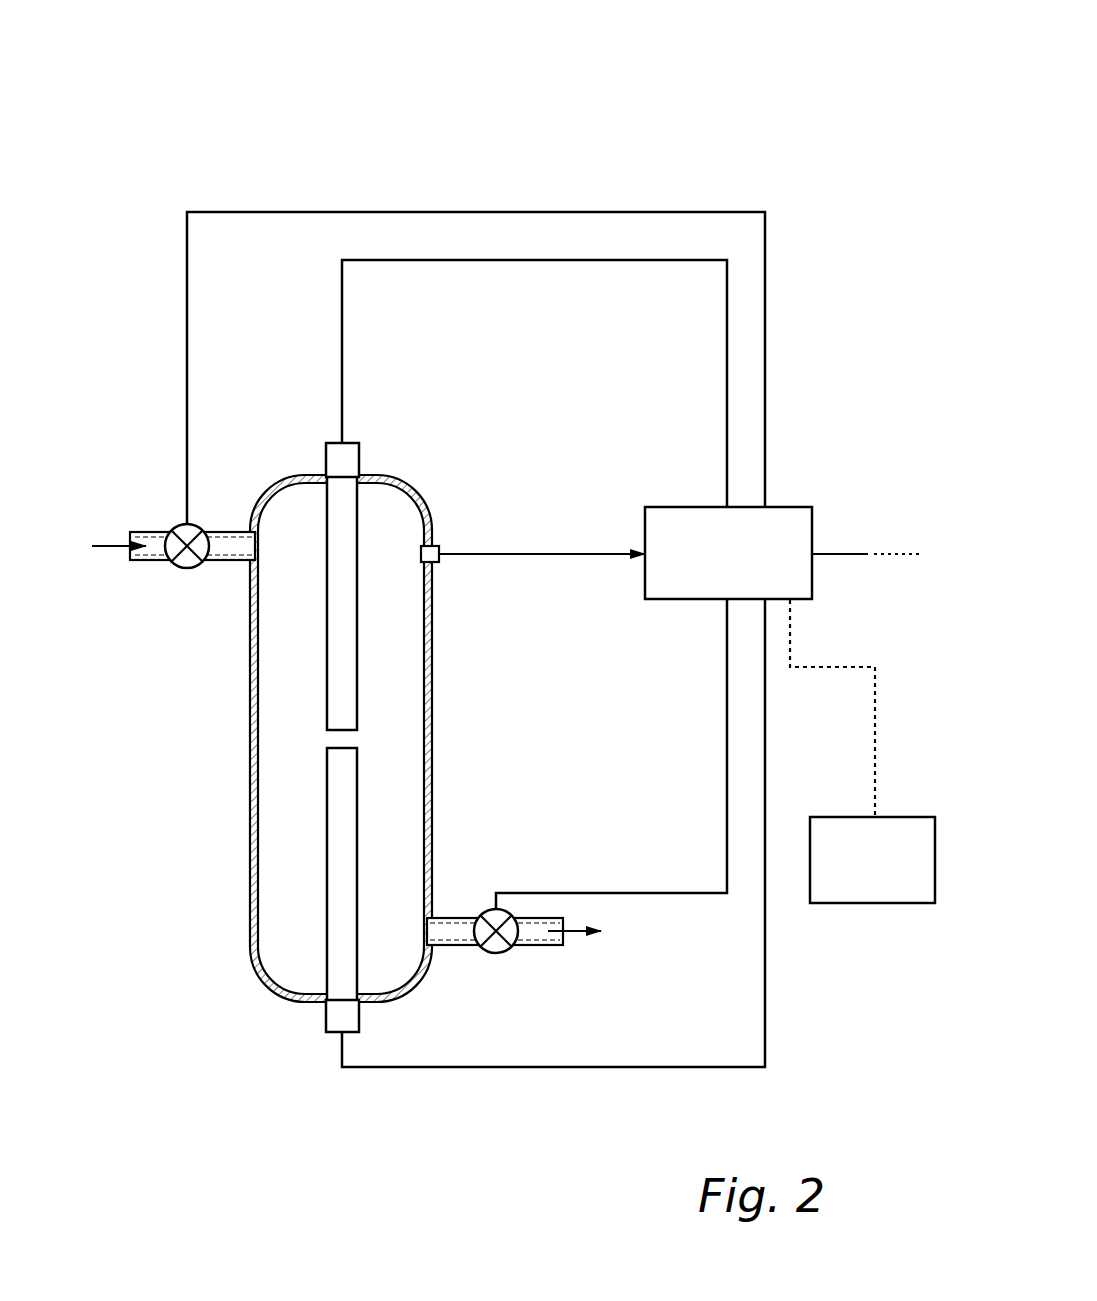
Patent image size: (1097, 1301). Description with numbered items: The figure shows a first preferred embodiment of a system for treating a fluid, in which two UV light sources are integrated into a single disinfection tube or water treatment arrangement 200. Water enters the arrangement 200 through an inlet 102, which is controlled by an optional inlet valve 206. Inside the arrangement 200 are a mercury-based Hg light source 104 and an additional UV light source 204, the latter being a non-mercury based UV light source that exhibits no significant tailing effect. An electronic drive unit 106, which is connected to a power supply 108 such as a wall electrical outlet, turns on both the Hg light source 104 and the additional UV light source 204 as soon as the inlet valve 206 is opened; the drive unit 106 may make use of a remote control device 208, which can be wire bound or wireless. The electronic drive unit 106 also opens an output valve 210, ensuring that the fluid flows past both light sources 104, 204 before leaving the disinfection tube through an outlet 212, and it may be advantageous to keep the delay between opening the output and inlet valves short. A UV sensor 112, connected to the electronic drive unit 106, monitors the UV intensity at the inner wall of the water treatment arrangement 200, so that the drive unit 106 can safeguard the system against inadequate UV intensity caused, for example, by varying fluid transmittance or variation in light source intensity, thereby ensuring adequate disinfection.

The disinfection tube/arrangement 200 is at (655, 113).
The inlet 102 is at (102, 542).
The Hg light source 104 is at (340, 700).
The electronic drive unit 106 is at (795, 522).
The power supply 108 is at (868, 554).
The UV sensor 112 is at (432, 550).
The additional UV light source 204 is at (335, 945).
The inlet valve 206 is at (190, 571).
The remote control device 208 is at (895, 904).
The output valve 210 is at (497, 954).
The outlet 212 is at (566, 940).